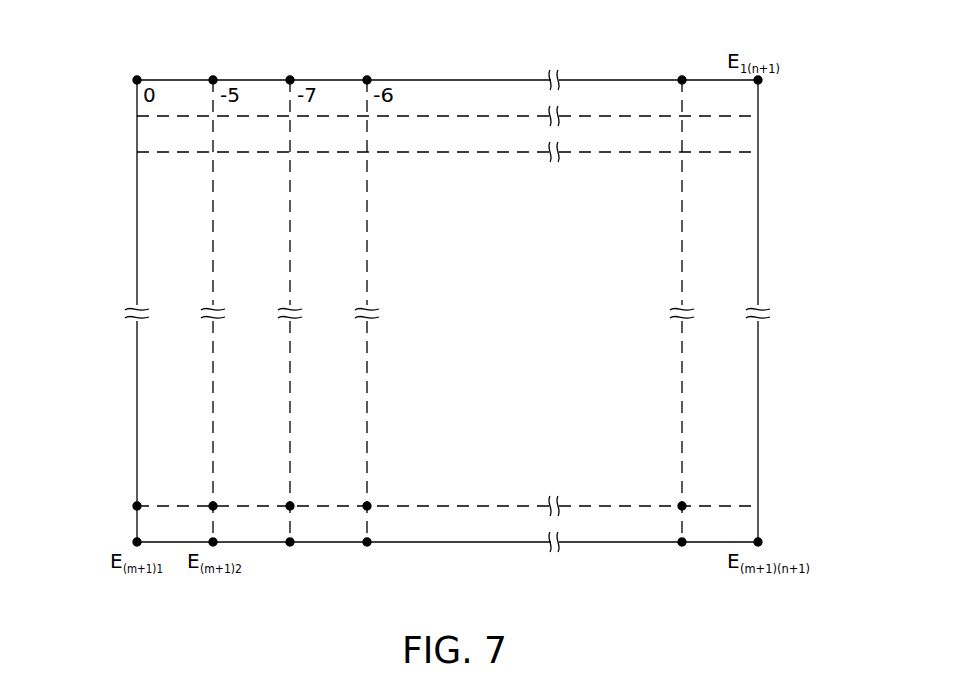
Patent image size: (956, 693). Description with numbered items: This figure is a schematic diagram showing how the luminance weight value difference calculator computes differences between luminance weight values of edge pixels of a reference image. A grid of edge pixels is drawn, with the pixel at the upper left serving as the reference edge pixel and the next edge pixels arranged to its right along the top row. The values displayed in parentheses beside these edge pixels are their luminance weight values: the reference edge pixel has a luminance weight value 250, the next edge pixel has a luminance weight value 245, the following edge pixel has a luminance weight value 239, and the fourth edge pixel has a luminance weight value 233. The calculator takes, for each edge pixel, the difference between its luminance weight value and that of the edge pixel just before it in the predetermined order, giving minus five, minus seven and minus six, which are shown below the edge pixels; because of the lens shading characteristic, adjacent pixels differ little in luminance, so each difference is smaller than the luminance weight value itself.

The node E11 value 250 is at (137, 66).
The node E12 value 245 is at (213, 77).
The node E13 value 239 is at (287, 66).
The node E14 value 233 is at (367, 77).